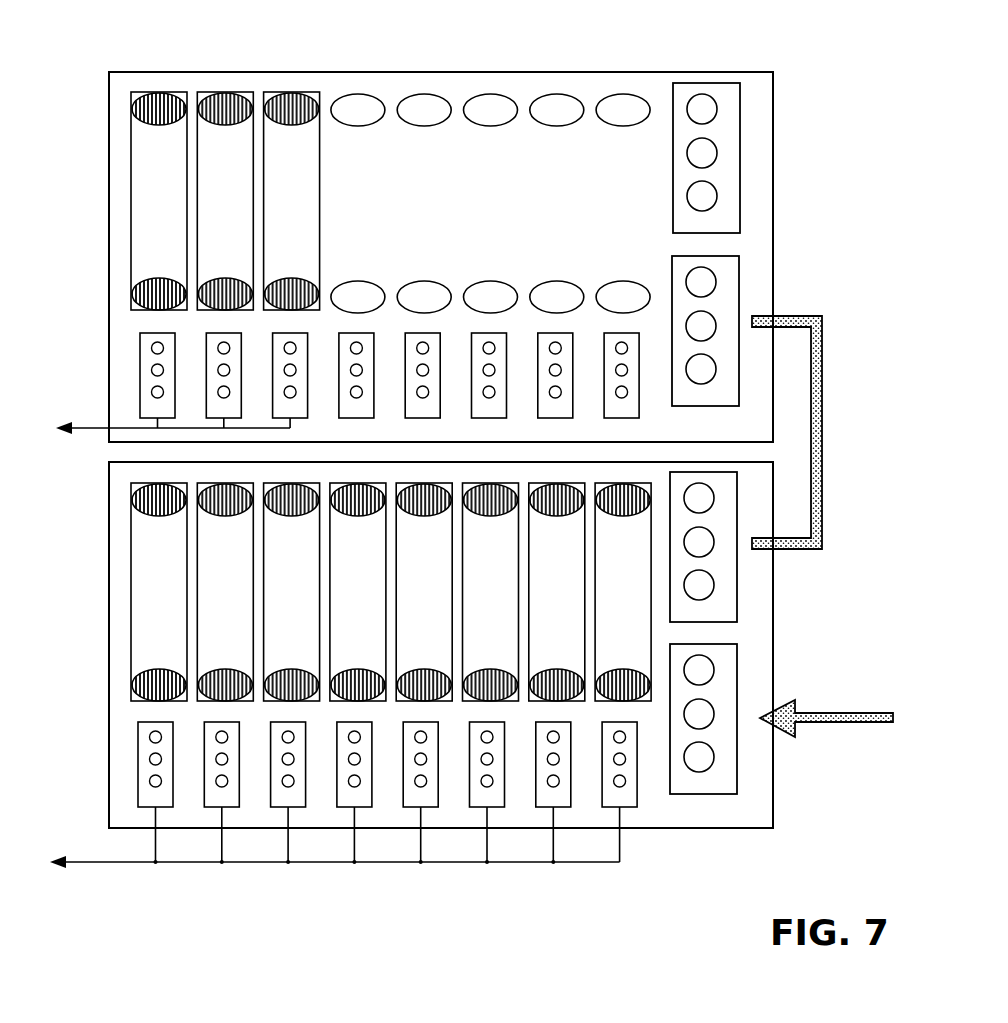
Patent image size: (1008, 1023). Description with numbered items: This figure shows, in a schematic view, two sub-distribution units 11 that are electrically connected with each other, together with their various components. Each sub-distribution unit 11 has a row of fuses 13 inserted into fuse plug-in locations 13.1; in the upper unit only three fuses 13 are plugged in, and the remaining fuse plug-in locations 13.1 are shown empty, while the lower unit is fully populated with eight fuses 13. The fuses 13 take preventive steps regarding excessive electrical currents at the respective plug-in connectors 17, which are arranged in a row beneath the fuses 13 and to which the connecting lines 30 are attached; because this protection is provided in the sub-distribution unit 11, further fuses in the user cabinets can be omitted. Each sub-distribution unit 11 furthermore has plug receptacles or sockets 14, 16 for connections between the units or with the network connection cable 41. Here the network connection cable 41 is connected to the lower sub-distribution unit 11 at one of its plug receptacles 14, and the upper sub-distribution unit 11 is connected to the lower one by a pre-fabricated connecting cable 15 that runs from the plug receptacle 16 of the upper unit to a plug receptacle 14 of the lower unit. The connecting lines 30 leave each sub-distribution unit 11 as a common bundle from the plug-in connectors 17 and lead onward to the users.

The sub-distribution unit 11 is at (583, 72).
The fuse 13 is at (150, 192).
The fuse plug-in location 13.1 is at (360, 104).
The plug receptacle 14 is at (748, 158).
The connecting cable 15 is at (822, 430).
The plug receptacle 16 is at (741, 280).
The plug-in connector 17 is at (148, 362).
The connecting line 30 is at (91, 427).
The network connection cable 41 is at (838, 725).